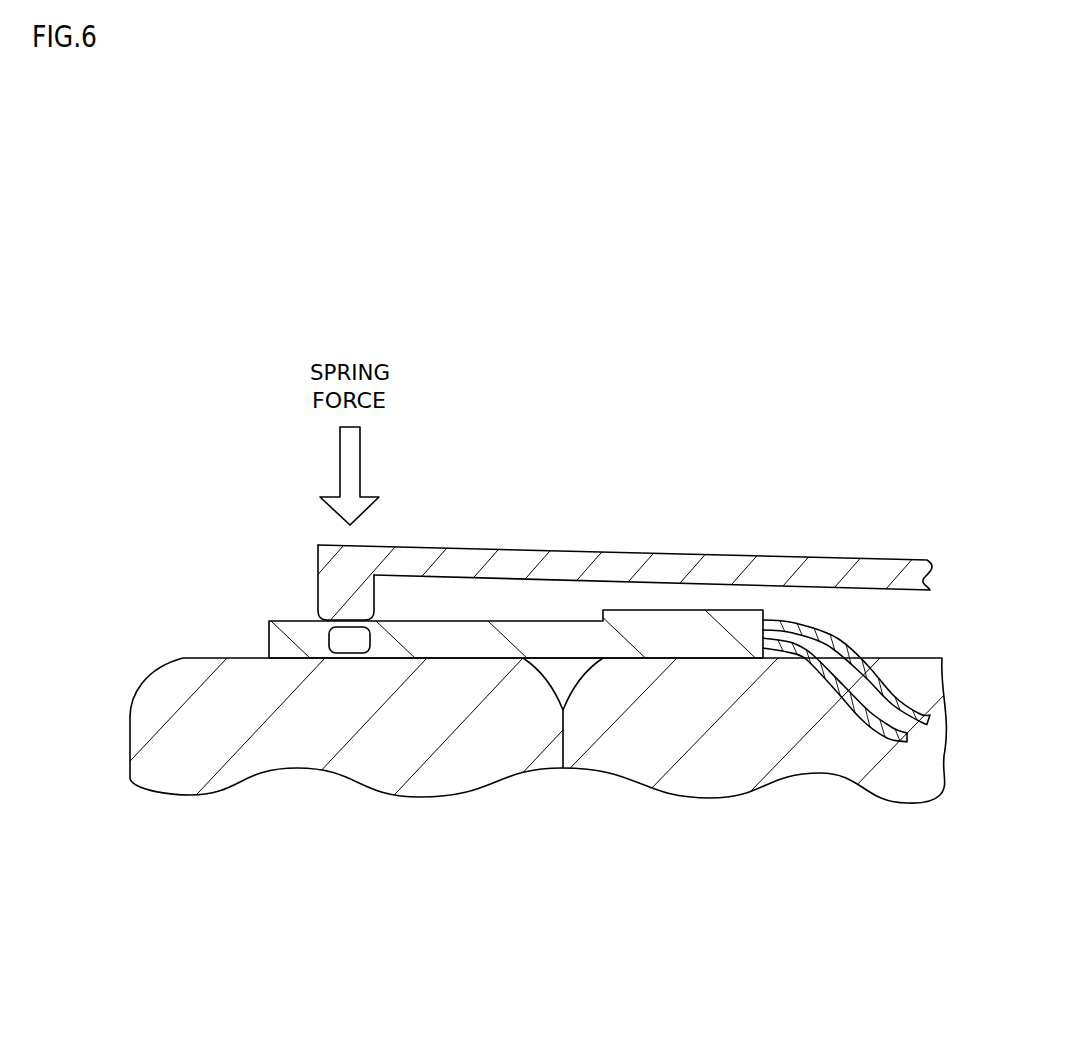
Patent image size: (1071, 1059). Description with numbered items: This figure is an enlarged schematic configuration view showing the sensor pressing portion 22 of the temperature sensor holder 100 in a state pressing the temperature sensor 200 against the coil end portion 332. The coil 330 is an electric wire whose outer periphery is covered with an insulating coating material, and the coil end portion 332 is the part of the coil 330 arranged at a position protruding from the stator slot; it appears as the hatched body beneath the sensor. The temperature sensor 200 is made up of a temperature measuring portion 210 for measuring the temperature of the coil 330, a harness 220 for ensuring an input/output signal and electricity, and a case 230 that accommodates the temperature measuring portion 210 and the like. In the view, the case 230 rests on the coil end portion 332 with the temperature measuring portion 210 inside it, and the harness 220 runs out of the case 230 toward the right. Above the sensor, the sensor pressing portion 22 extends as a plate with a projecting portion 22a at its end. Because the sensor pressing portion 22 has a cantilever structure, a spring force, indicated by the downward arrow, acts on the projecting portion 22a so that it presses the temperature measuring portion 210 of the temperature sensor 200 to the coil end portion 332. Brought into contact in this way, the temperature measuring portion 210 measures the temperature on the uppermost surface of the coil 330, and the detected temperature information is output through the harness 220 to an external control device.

The temperature sensor holder 100 is at (840, 502).
The sensor pressing portion 22 is at (581, 563).
The projecting portion 22a is at (338, 598).
The temperature measuring portion 210 is at (342, 641).
The case 230 is at (618, 660).
The harness 220 is at (885, 733).
The temperature sensor 200 is at (798, 809).
The coil 330 is at (677, 942).
The coil end portion 332 is at (492, 717).